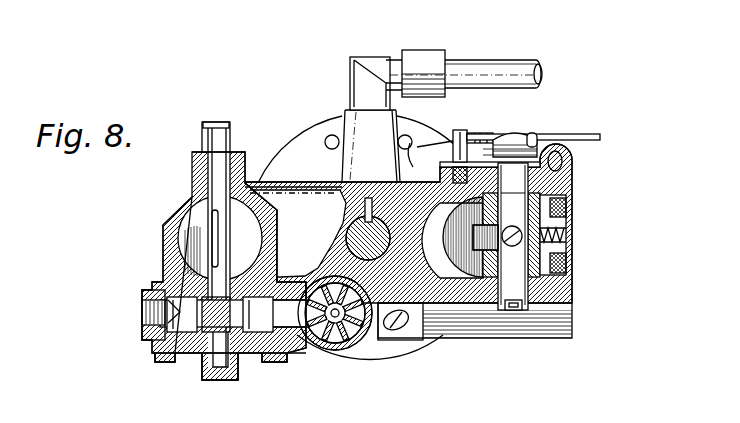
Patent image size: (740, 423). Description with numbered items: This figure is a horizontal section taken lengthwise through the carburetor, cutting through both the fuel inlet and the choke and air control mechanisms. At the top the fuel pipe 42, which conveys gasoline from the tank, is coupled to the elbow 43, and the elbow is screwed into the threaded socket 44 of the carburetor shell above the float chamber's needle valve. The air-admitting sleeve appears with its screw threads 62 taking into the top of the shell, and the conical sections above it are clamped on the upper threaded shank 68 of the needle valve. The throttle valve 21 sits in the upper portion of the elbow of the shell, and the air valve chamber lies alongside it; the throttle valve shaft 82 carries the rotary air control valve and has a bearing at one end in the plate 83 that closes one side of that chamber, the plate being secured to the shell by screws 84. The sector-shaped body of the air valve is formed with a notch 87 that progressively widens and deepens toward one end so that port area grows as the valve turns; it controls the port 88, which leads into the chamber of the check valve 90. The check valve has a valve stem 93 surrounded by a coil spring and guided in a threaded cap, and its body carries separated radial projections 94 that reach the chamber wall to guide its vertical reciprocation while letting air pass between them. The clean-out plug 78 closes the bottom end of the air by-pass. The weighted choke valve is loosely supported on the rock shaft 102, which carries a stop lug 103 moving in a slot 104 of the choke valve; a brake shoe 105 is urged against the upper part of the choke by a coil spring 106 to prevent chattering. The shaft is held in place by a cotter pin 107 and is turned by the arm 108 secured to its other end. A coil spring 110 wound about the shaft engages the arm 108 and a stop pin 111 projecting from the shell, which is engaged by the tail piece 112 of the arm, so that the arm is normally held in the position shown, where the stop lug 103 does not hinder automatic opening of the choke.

The throttle valve 21 is at (192, 218).
The pipe 42 is at (512, 65).
The elbow 43 is at (378, 58).
The threaded socket 44 is at (359, 269).
The screw threads 62 is at (360, 200).
The upper threaded shank 68 is at (357, 227).
The clean-out plug 78 is at (460, 236).
The throttle valve shaft 82 is at (230, 133).
The plate 83 is at (190, 357).
The screws 84 is at (162, 362).
The notch 87 is at (165, 300).
The port 88 is at (292, 305).
The check valve 90 is at (335, 343).
The valve stem 93 is at (325, 343).
The radial projections 94 is at (355, 348).
The shaft 102 is at (508, 302).
The stop lug 103 is at (495, 252).
The slot 104 is at (470, 300).
The brake shoe 105 is at (575, 288).
The coil spring 106 is at (566, 235).
The cotter pin 107 is at (519, 312).
The arm 108 is at (595, 134).
The coil spring 110 is at (537, 147).
The stop pin 111 is at (458, 130).
The tail piece 112 is at (478, 133).